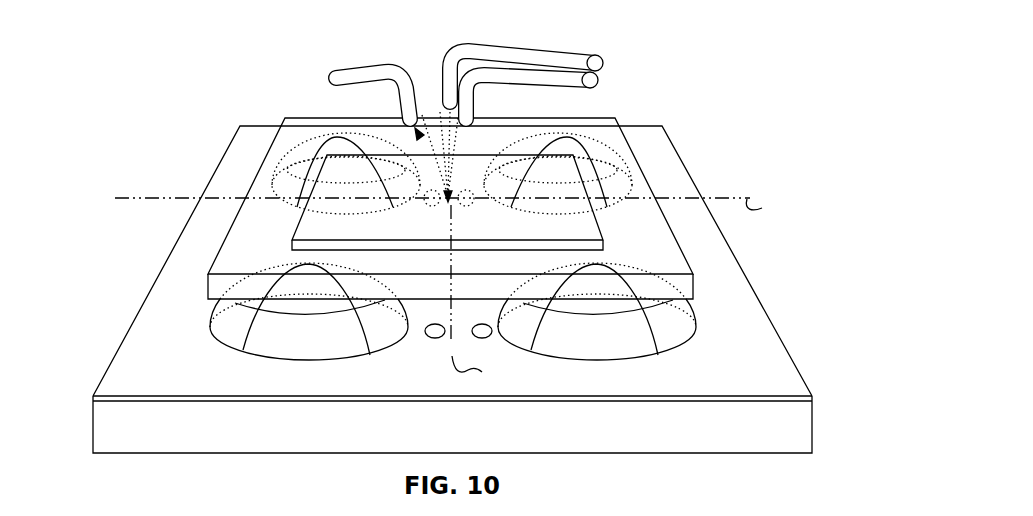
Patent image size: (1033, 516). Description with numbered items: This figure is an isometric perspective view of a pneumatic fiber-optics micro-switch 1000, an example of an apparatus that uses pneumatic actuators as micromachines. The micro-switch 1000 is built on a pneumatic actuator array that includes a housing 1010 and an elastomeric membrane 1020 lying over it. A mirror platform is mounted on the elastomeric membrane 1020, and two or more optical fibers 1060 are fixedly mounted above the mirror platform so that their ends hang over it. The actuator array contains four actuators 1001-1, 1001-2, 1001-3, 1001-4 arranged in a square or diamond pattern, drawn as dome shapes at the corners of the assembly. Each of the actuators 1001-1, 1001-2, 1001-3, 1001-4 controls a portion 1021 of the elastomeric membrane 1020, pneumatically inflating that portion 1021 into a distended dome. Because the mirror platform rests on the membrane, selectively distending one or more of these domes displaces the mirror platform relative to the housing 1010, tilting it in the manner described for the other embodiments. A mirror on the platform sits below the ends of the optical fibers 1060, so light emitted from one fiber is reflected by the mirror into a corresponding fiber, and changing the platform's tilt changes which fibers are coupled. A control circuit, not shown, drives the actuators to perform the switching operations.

The pneumatic fiber-optics micro-switch 1000 is at (180, 47).
The housing 1010 is at (92, 432).
The elastomeric membrane 1020 is at (110, 386).
The portion of elastomeric membrane 1021 is at (218, 318).
The actuator 1001-1 is at (243, 370).
The actuator 1001-2 is at (269, 178).
The actuator 1001-3 is at (640, 169).
The actuator 1001-4 is at (662, 370).
The optical fibers 1060 is at (490, 42).